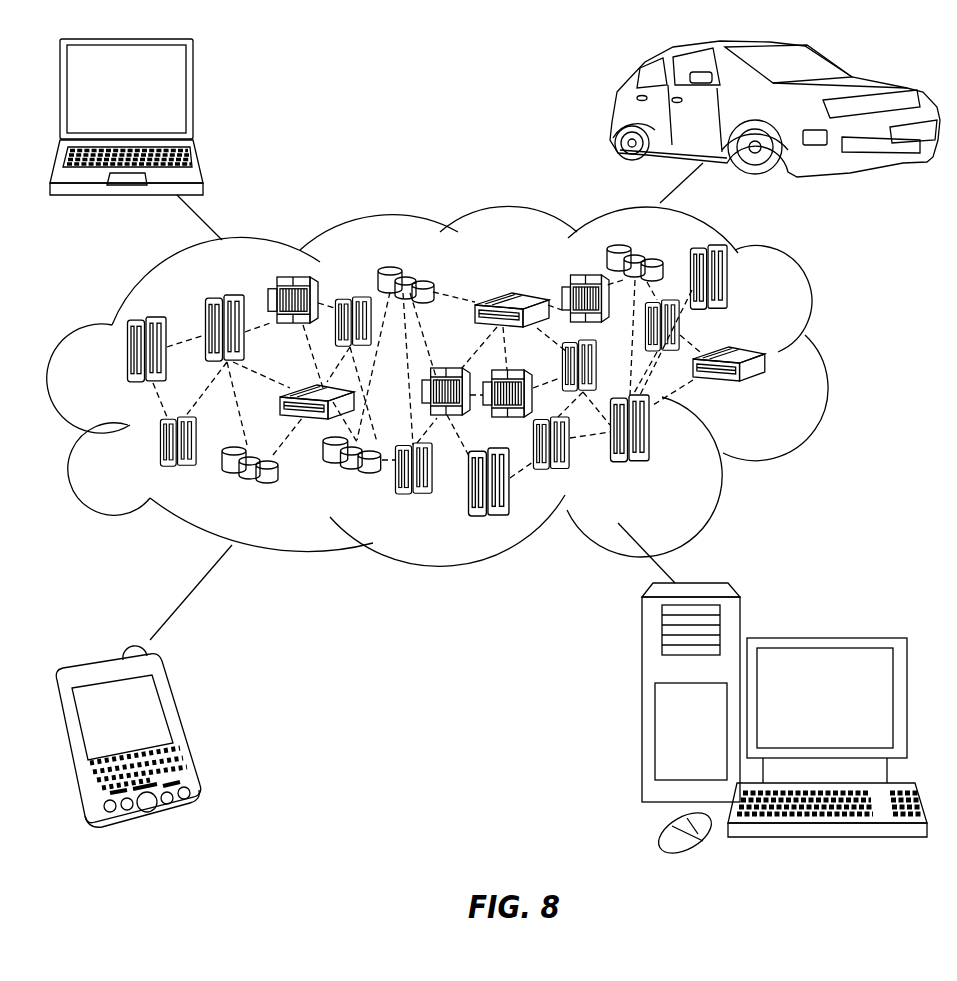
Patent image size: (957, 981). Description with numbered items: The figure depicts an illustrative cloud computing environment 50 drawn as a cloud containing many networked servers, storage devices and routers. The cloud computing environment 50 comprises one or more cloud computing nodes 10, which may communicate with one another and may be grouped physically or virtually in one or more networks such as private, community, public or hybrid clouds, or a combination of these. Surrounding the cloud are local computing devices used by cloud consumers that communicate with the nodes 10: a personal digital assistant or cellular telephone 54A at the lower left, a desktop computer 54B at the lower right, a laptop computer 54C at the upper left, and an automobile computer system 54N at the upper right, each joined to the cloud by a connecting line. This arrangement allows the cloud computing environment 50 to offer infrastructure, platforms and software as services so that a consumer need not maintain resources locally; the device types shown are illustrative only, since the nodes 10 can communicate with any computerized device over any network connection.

The cloud computing node 10 is at (781, 392).
The cloud computing environment 50 is at (822, 360).
The personal digital assistant (PDA) or cellular telephone 54A is at (180, 727).
The desktop computer 54B is at (822, 638).
The laptop computer 54C is at (193, 100).
The automobile computer system 54N is at (612, 112).